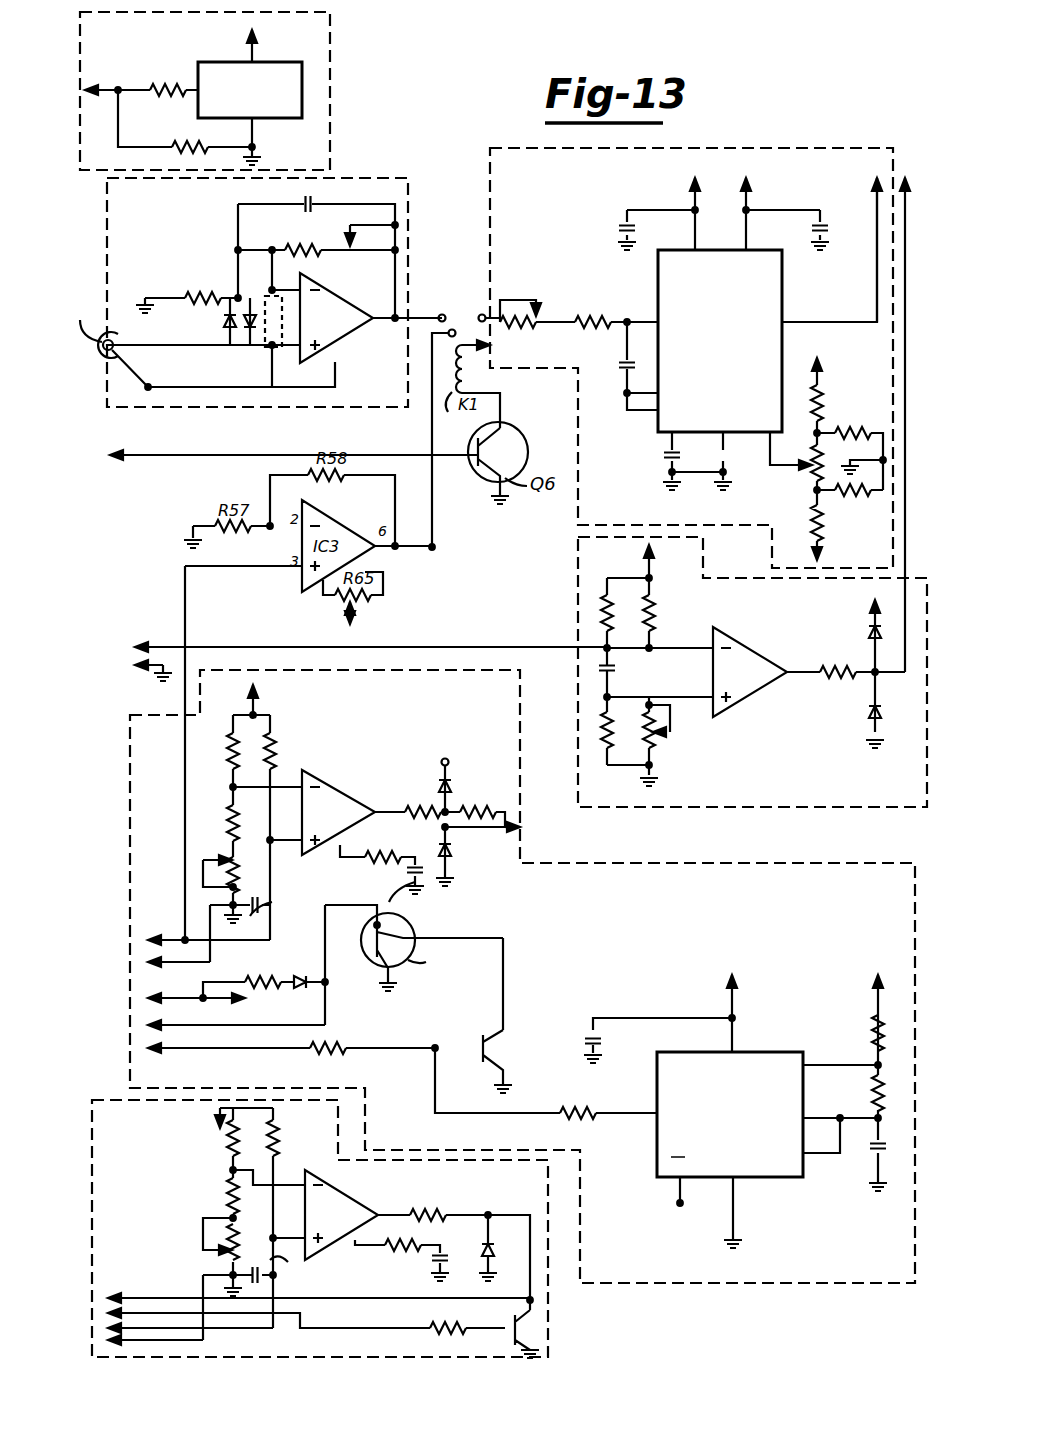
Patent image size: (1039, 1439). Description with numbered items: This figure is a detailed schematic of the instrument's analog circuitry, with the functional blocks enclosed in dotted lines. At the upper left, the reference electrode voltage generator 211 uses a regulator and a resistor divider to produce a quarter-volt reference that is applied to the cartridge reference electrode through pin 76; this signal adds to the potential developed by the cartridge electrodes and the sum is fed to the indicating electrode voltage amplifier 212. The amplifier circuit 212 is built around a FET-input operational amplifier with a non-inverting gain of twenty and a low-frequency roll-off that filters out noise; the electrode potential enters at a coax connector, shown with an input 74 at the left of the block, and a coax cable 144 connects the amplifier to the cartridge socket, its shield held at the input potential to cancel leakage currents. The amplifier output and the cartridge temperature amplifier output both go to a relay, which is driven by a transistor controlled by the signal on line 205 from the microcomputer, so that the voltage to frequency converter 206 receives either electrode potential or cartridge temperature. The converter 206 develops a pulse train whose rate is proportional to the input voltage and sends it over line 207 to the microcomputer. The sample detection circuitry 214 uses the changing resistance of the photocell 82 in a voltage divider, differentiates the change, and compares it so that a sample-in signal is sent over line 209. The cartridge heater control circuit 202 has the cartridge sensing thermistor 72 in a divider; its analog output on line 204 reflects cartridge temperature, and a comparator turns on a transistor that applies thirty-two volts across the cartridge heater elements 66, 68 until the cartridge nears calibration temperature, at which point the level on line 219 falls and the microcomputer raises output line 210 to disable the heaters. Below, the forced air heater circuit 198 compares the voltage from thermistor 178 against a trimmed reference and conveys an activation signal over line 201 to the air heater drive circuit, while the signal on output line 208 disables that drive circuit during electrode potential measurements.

The reference electrode voltage generator 211 is at (233, 91).
The pin 76 is at (118, 92).
The indicating electrode voltage amplifier 212 is at (280, 288).
The input connector 74 is at (112, 342).
The coax cable 144 is at (288, 356).
The line 205 is at (98, 480).
The line 204 is at (432, 532).
The photocell 82 is at (133, 662).
The voltage to frequency converter 206 is at (655, 148).
The line 207 is at (877, 164).
The line 209 is at (906, 170).
The sample detection circuitry 214 is at (762, 808).
The cartridge heater control circuit 202 is at (494, 976).
The line 219 is at (520, 836).
The cartridge sensing thermistor 72 is at (142, 952).
The cartridge heater element 66 is at (142, 1010).
The cartridge heater element 68 is at (132, 1028).
The output line 210 is at (138, 1084).
The thermistor 178 is at (100, 1298).
The output line 208 is at (100, 1313).
The line 201 is at (103, 1328).
The forced air heater circuit 198 is at (355, 1229).